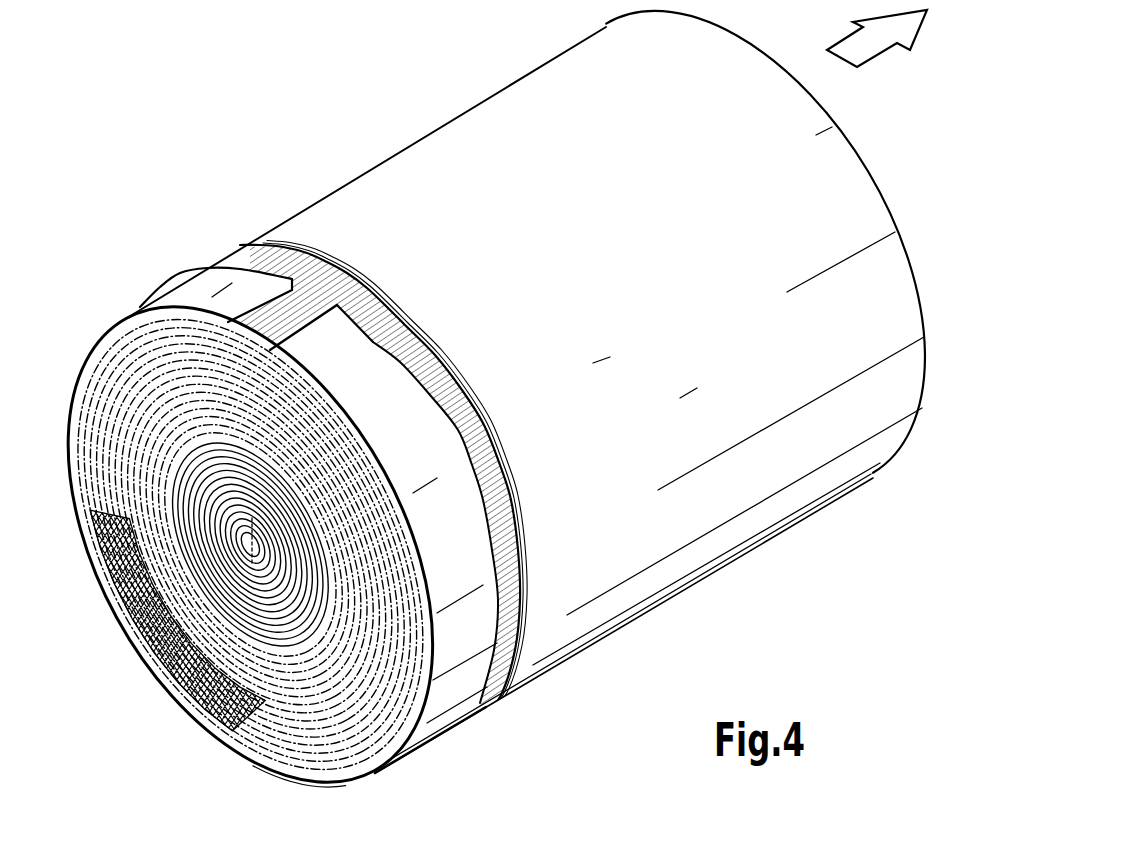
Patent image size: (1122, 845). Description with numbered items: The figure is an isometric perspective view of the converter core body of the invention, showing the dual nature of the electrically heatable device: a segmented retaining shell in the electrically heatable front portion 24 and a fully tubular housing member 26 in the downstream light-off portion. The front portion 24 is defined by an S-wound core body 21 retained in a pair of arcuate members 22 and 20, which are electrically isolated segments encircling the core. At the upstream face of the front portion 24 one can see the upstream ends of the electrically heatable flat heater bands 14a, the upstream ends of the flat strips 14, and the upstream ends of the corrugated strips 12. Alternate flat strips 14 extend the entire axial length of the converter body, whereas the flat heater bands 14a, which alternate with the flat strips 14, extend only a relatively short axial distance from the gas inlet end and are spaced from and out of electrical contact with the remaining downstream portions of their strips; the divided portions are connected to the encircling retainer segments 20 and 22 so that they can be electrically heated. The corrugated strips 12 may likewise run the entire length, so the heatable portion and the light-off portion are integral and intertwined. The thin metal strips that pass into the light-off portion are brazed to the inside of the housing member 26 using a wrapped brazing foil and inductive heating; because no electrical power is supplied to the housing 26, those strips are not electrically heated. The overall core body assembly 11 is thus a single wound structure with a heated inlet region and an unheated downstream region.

The roll assembly 11 is at (463, 422).
The corrugated strips 12 is at (166, 649).
The flat strips 14 is at (166, 632).
The flat heater bands 14a is at (160, 675).
The arcuate member 20 is at (357, 365).
The S-wound core body 21 is at (378, 722).
The arcuate member 22 is at (83, 358).
The front portion 24 is at (445, 508).
The housing member 26 is at (782, 467).